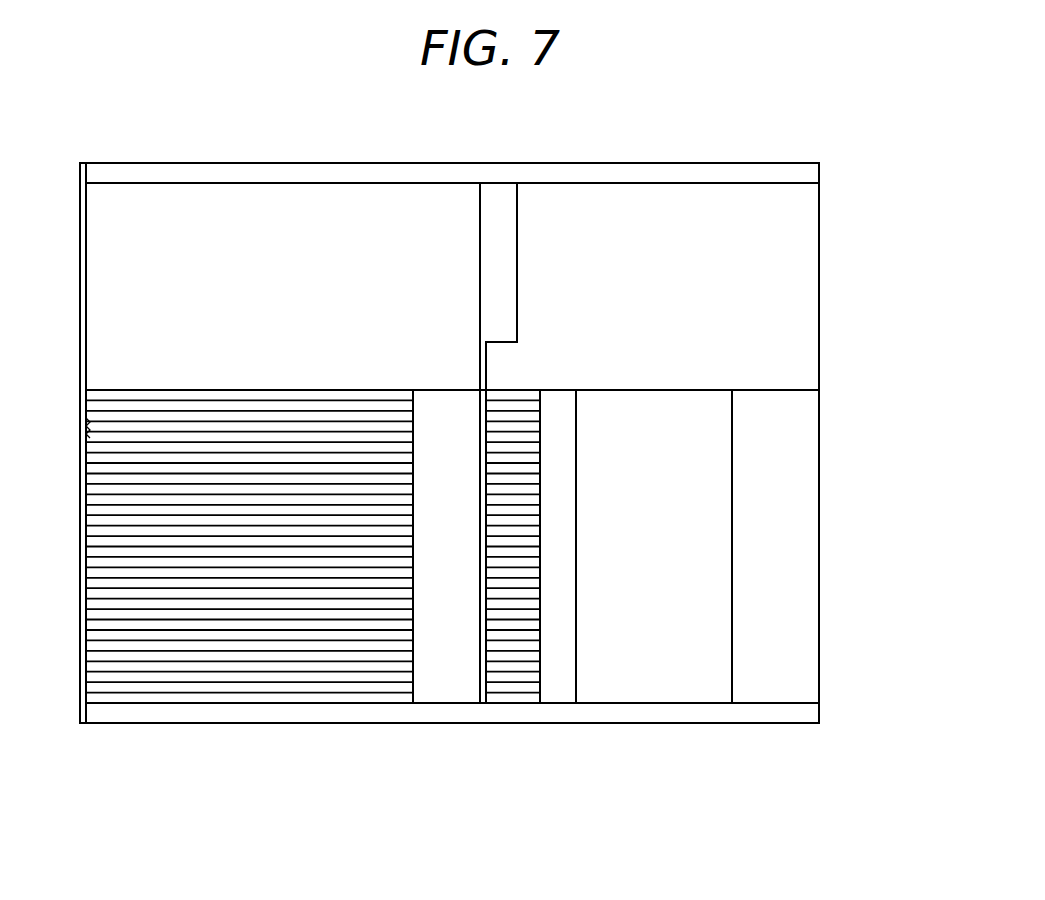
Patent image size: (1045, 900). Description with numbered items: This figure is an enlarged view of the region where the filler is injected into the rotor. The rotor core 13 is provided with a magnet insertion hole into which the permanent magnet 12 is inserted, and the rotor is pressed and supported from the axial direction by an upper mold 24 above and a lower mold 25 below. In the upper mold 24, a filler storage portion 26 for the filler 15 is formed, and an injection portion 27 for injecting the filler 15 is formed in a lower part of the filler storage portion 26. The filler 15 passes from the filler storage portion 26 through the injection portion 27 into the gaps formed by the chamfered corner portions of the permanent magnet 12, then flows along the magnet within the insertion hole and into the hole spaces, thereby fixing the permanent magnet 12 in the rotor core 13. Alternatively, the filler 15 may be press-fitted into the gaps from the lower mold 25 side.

The permanent magnet 12 is at (450, 686).
The rotor core 13 is at (283, 687).
The filler 15 is at (495, 203).
The upper mold 24 is at (803, 286).
The lower mold 25 is at (803, 715).
The filler storage portion 26 is at (518, 228).
The injection portion 27 is at (486, 373).